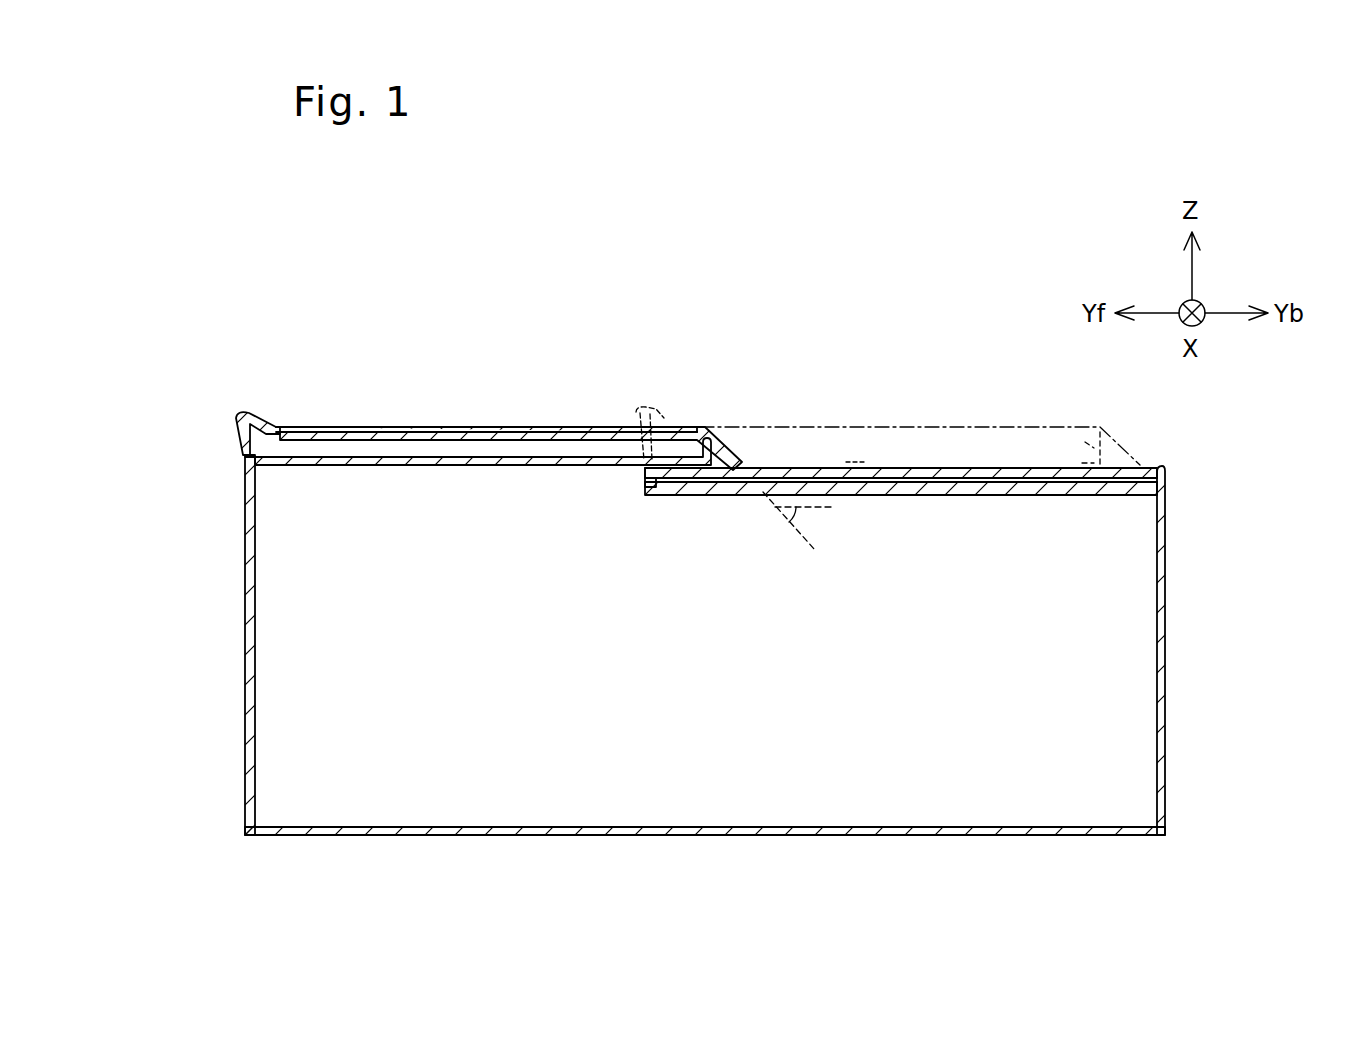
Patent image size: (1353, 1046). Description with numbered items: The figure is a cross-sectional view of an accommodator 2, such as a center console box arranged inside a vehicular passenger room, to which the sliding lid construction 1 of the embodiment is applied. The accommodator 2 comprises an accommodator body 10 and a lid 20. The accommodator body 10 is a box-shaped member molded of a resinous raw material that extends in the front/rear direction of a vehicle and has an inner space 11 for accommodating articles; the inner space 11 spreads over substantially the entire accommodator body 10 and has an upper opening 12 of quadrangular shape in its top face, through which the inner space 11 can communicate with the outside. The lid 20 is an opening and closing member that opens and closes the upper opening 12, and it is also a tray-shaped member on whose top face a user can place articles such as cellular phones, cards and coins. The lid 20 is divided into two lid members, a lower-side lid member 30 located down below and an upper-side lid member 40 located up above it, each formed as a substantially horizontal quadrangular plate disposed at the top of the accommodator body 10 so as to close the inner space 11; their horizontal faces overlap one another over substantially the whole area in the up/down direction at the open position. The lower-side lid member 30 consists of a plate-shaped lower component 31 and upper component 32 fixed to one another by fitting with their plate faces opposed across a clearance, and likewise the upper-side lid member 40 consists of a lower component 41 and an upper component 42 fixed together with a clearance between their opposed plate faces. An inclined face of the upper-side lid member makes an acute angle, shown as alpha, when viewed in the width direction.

The sliding lid construction 1 is at (800, 356).
The accommodator 2 is at (222, 438).
The accommodator body 10 is at (248, 680).
The inner space 11 is at (1125, 648).
The upper opening 12 is at (250, 464).
The lid 20 is at (718, 410).
The lower-side lid member 30 is at (985, 352).
The lower component 31 is at (883, 468).
The upper component 32 is at (960, 468).
The upper-side lid member 40 is at (545, 318).
The lower component 41 is at (447, 456).
The upper component 42 is at (520, 436).